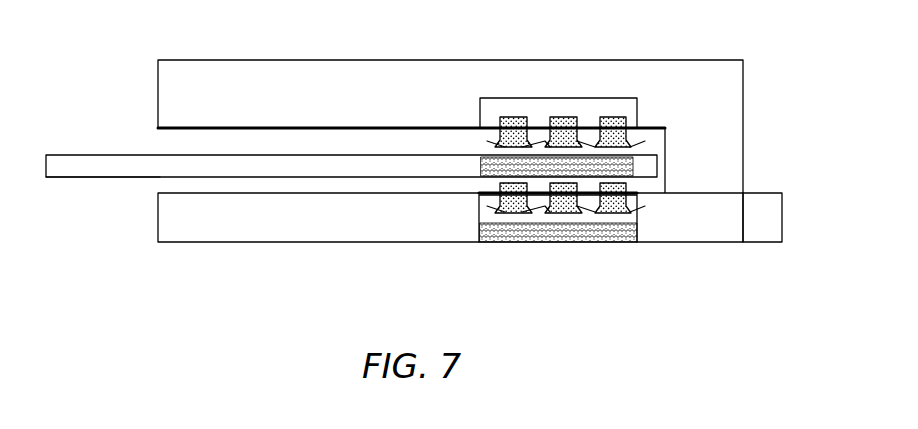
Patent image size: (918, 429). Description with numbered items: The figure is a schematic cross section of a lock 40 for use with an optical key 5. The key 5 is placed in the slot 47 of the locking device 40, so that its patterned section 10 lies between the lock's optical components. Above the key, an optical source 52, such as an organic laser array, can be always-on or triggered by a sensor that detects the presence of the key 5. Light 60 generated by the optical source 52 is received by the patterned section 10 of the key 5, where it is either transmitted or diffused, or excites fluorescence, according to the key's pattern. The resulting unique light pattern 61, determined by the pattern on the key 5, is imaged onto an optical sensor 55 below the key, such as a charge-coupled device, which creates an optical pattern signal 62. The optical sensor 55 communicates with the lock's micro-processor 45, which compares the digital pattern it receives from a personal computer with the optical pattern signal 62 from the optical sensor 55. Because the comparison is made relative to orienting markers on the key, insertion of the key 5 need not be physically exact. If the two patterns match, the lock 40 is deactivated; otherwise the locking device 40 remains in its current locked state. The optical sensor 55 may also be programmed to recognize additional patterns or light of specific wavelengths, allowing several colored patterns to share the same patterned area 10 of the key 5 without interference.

The key 5 is at (87, 155).
The patterned section 10 is at (483, 158).
The lock 40 is at (693, 75).
The micro-processor 45 is at (765, 228).
The slot 47 is at (120, 178).
The optical source 52 is at (582, 108).
The optical sensor 55 is at (485, 212).
The light 60 is at (640, 143).
The unique light pattern 61 is at (568, 212).
The optical pattern signal 62 is at (500, 238).